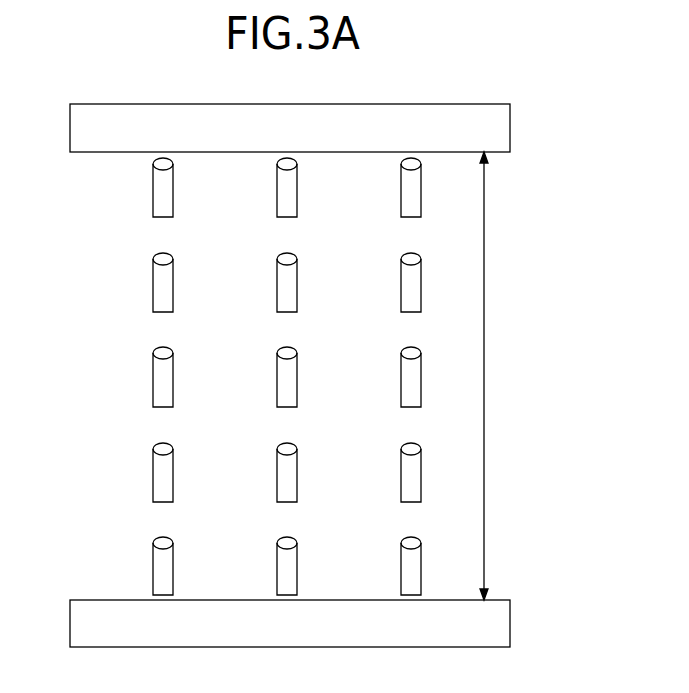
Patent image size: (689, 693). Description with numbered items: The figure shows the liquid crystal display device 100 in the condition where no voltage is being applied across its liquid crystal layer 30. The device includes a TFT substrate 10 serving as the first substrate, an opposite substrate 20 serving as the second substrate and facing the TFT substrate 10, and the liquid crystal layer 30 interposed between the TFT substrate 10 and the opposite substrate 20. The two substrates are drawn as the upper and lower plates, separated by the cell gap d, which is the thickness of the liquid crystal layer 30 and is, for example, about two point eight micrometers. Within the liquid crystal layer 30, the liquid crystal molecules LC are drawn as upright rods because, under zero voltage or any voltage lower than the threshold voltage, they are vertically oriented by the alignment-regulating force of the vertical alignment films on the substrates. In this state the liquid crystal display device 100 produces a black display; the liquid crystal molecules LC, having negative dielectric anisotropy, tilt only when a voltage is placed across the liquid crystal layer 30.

The liquid crystal display device 100 is at (531, 105).
The opposite substrate 20 is at (70, 104).
The TFT substrate 10 is at (70, 600).
The liquid crystal layer 30 is at (353, 340).
The liquid crystal molecules LC is at (162, 288).